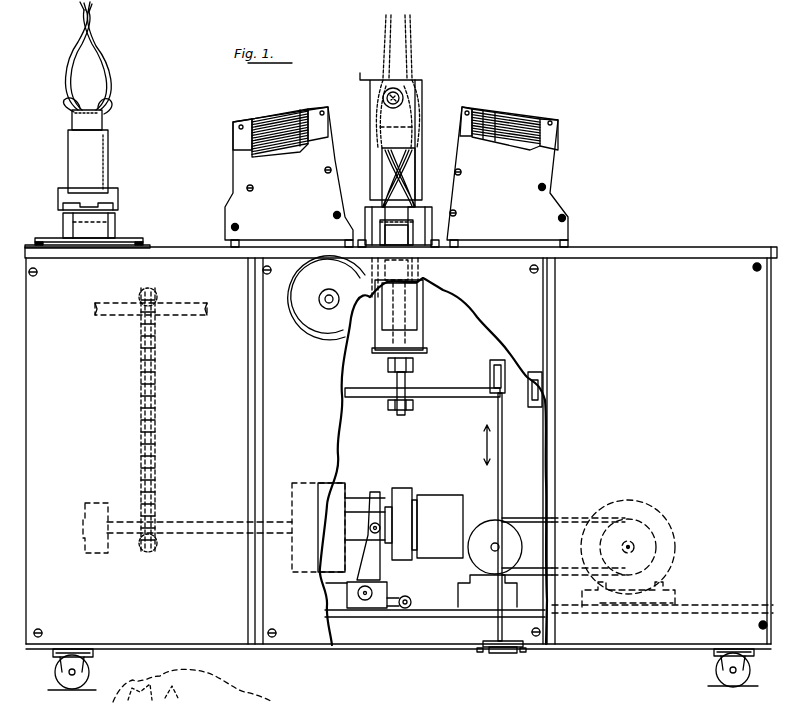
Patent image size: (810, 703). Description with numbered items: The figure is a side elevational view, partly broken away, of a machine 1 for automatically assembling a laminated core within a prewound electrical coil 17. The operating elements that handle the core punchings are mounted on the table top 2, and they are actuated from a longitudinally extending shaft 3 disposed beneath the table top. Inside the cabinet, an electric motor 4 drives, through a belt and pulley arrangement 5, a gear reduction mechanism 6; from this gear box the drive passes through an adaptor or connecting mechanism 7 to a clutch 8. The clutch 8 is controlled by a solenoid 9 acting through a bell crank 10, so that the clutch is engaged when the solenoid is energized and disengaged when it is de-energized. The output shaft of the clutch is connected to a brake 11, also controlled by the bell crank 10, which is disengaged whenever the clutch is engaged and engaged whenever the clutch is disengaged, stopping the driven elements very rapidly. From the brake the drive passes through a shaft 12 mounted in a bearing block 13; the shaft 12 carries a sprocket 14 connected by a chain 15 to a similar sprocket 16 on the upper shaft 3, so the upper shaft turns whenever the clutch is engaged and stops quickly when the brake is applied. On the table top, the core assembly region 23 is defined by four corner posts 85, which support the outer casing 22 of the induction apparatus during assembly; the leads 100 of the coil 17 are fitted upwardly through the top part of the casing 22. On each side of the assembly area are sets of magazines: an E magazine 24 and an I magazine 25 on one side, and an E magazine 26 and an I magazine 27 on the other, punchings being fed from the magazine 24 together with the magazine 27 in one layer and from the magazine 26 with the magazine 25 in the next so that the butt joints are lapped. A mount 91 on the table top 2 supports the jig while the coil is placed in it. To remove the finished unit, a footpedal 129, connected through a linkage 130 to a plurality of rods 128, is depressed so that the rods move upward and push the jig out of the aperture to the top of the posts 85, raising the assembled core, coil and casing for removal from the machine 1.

The machine 1 is at (111, 395).
The table top 2 is at (636, 246).
The shaft 3 is at (111, 302).
The electric motor 4 is at (664, 512).
The belt and pulley arrangement 5 is at (575, 520).
The gear reduction mechanism 6 is at (480, 497).
The adaptor or connecting mechanism 7 is at (436, 500).
The clutch 8 is at (403, 487).
The solenoid 9 is at (343, 582).
The bell crank 10 is at (381, 568).
The brake 11 is at (305, 480).
The shaft 12 is at (203, 521).
The bearing block 13 is at (97, 502).
The sprocket 14 is at (158, 544).
The chain 15 is at (156, 397).
The sprocket 16 is at (151, 290).
The coil 17 is at (393, 336).
The outer casing 22 is at (423, 99).
The core assembly region 23 is at (403, 244).
The E magazine 24 is at (541, 140).
The I magazine 25 is at (483, 113).
The E magazine 26 is at (233, 135).
The I magazine 27 is at (308, 112).
The corner posts 85 is at (368, 217).
The mount 91 is at (62, 220).
The leads 100 is at (403, 169).
The rods 128 is at (424, 312).
The footpedal 129 is at (512, 651).
The linkage 130 is at (443, 387).